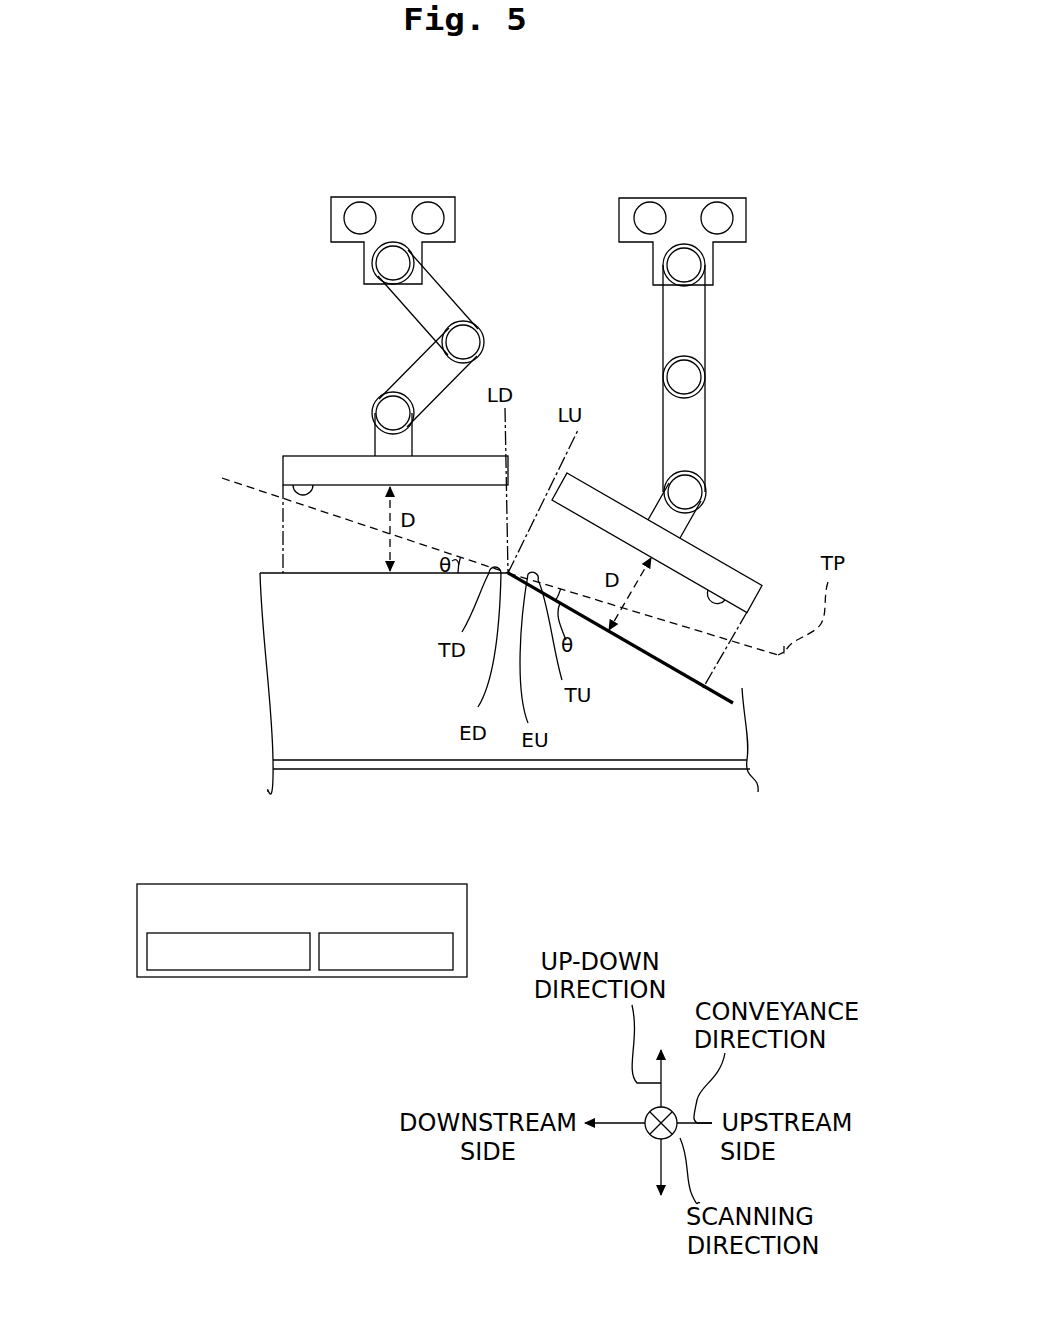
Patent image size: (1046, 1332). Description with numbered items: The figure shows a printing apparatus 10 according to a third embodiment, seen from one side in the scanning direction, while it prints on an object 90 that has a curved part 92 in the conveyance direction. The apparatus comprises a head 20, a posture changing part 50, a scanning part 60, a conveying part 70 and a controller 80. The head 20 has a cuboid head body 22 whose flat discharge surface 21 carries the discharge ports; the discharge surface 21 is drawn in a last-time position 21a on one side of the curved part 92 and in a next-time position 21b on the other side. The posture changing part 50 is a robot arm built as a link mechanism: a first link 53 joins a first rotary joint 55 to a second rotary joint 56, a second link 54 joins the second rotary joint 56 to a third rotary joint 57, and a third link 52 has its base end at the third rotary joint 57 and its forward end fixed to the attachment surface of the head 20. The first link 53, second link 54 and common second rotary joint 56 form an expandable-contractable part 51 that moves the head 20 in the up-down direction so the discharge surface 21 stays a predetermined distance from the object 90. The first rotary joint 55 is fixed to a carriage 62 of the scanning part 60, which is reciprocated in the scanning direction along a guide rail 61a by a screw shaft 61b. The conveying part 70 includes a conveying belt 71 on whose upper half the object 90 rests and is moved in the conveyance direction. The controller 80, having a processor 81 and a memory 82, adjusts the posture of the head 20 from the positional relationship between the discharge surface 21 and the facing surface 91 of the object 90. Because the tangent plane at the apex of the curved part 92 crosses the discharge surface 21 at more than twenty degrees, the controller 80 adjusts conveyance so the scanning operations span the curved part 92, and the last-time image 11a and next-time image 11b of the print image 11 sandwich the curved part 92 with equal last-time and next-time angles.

The printing apparatus 10 is at (546, 170).
The print image 11 is at (610, 539).
The last-time image 11a is at (428, 572).
The next-time image 11b is at (690, 660).
The head 20 is at (476, 462).
The discharge surface 21 is at (476, 498).
The discharge surface 21a is at (283, 480).
The discharge surface 21b is at (730, 598).
The head body 22 is at (303, 457).
The posture changing part 50 is at (533, 373).
The expandable-contractable part 51 is at (420, 347).
The third link 52 is at (392, 450).
The first link 53 is at (415, 302).
The second link 54 is at (440, 378).
The first rotary joint 55 is at (386, 262).
The second rotary joint 56 is at (466, 342).
The third rotary joint 57 is at (398, 416).
The scanning part 60 is at (406, 188).
The guide rail 61a is at (428, 222).
The screw shaft 61b is at (356, 222).
The carriage 62 is at (340, 205).
The conveying part 70 is at (489, 656).
The conveying belt 71 is at (414, 770).
The controller 80 is at (266, 966).
The processor 81 is at (186, 971).
The memory 82 is at (430, 971).
The object 90 is at (489, 647).
The facing surface 91 is at (313, 572).
The curved part 92 is at (511, 548).